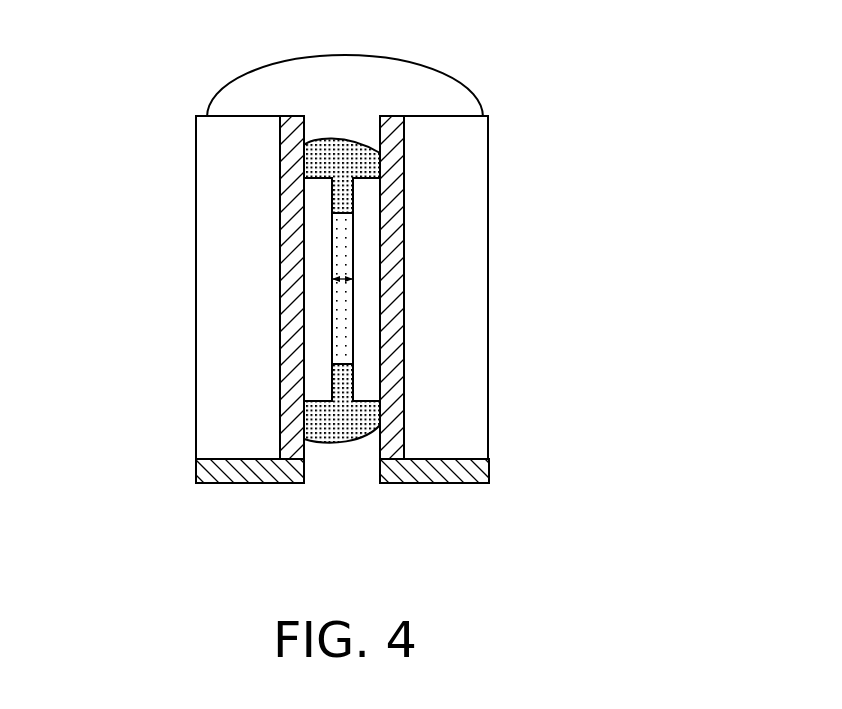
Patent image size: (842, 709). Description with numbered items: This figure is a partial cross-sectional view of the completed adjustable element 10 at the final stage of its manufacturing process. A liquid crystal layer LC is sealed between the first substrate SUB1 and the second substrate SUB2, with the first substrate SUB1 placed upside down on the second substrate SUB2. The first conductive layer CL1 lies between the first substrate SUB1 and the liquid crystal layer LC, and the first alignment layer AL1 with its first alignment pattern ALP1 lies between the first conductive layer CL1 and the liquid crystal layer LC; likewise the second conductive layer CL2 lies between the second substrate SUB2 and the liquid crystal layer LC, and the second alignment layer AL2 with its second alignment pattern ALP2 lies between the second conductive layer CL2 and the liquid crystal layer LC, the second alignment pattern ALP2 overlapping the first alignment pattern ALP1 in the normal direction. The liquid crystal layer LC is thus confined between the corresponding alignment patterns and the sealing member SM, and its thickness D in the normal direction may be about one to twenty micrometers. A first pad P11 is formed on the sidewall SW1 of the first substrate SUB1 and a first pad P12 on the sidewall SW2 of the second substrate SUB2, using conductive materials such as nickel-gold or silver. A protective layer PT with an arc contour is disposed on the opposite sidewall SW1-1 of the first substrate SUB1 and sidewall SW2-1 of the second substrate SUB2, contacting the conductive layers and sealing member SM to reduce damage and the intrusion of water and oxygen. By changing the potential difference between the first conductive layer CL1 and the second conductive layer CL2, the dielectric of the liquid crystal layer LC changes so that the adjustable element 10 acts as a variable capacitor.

The second substrate SUB2 is at (210, 222).
The first substrate SUB1 is at (450, 234).
The second conductive layer CL2 is at (290, 253).
The first conductive layer CL1 is at (393, 295).
The sidewall of the second substrate SW2 is at (238, 461).
The sidewall of the first substrate SW1 is at (445, 461).
The sidewall of the second substrate SW2-1 is at (232, 117).
The sidewall of the first substrate SW1-1 is at (458, 117).
The first pad P12 is at (263, 475).
The first pad P11 is at (420, 473).
The protective layer PT is at (375, 75).
The second alignment pattern ALP2 is at (313, 293).
The second alignment layer AL2 is at (318, 289).
The first alignment pattern ALP1 is at (368, 315).
The first alignment layer AL1 is at (366, 289).
The liquid crystal layer LC is at (342, 360).
The sealing member SM is at (328, 443).
The thickness of the liquid crystal layer D is at (342, 270).
The adjustable element 10 is at (667, 573).